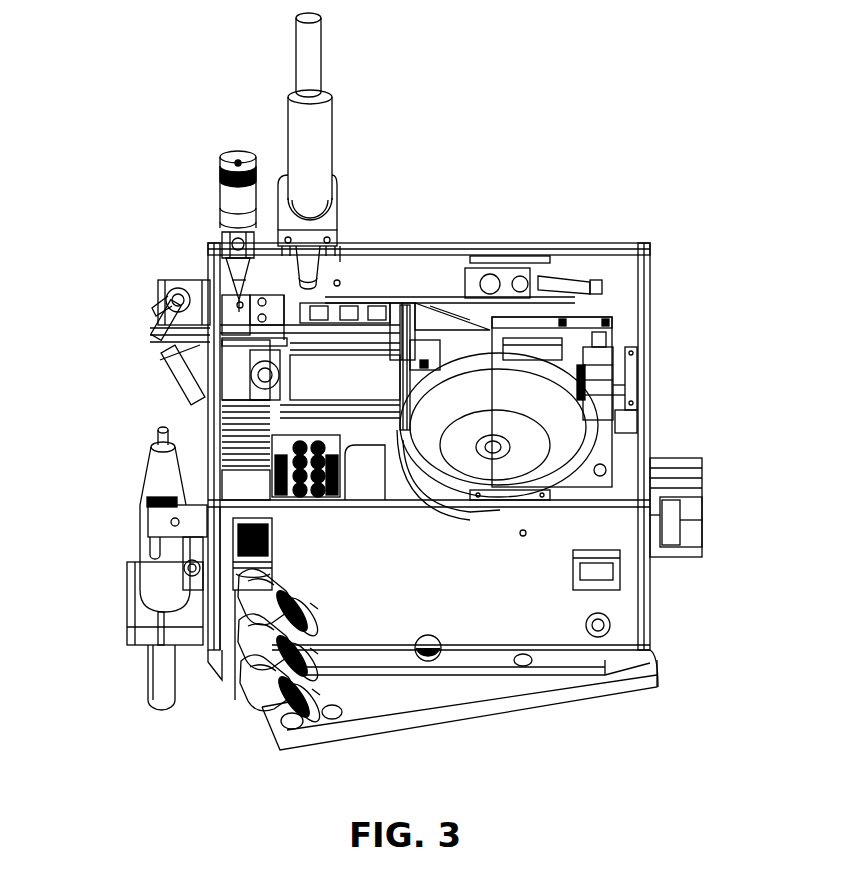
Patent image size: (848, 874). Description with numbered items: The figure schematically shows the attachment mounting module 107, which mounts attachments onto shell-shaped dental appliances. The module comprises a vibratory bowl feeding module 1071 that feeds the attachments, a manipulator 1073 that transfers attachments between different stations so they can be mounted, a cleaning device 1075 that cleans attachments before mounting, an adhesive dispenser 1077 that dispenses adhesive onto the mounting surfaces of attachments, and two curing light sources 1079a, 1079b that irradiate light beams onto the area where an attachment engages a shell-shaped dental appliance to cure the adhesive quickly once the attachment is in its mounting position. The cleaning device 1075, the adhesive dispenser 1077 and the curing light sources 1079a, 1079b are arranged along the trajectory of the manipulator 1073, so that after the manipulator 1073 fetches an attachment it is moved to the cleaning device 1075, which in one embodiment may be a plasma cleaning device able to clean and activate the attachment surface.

The attachment mounting module 107 is at (552, 97).
The vibratory bowl feeding module 1071 is at (522, 475).
The manipulator 1073 is at (230, 327).
The cleaning device 1075 is at (320, 128).
The adhesive dispenser 1077 is at (220, 188).
The curing light source 1079a is at (175, 388).
The curing light source 1079b is at (168, 278).